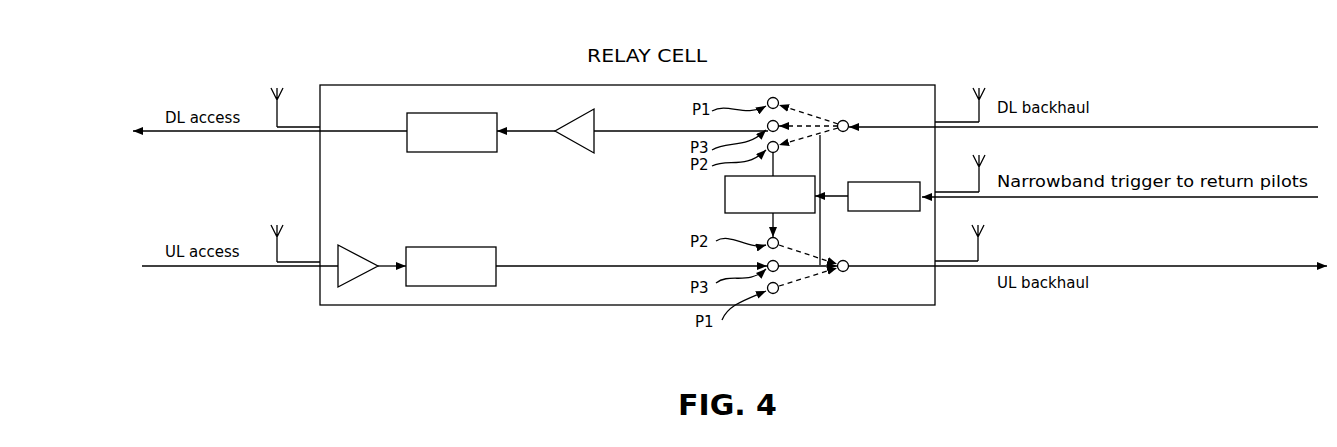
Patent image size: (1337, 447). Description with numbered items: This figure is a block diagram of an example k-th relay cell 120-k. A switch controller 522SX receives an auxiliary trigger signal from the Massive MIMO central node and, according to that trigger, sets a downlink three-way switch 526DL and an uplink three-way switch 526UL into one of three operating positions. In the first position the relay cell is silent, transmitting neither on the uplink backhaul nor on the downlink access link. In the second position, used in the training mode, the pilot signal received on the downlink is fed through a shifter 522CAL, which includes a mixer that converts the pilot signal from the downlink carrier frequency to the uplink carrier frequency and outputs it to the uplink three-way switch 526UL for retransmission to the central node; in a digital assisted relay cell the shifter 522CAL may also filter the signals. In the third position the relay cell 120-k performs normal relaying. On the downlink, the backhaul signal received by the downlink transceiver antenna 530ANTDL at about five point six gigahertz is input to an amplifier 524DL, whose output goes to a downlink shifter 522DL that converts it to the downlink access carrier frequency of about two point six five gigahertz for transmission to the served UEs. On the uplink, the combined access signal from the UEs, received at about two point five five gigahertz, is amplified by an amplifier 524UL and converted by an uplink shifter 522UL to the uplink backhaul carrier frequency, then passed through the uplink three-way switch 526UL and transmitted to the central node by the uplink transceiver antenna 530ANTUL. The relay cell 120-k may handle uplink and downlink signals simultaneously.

The k-th relay cell 120-k is at (925, 85).
The downlink shifter 522DL is at (452, 113).
The amplifier 524DL is at (633, 119).
The downlink three-way switch 526DL is at (813, 102).
The downlink transceiver antenna 530ANTDL is at (1026, 69).
The shifter 522CAL is at (725, 208).
The switch controller 522SX is at (884, 196).
The uplink shifter 522UL is at (530, 243).
The amplifier 524UL is at (350, 284).
The uplink three-way switch 526UL is at (809, 290).
The uplink transceiver antenna 530ANTUL is at (965, 286).